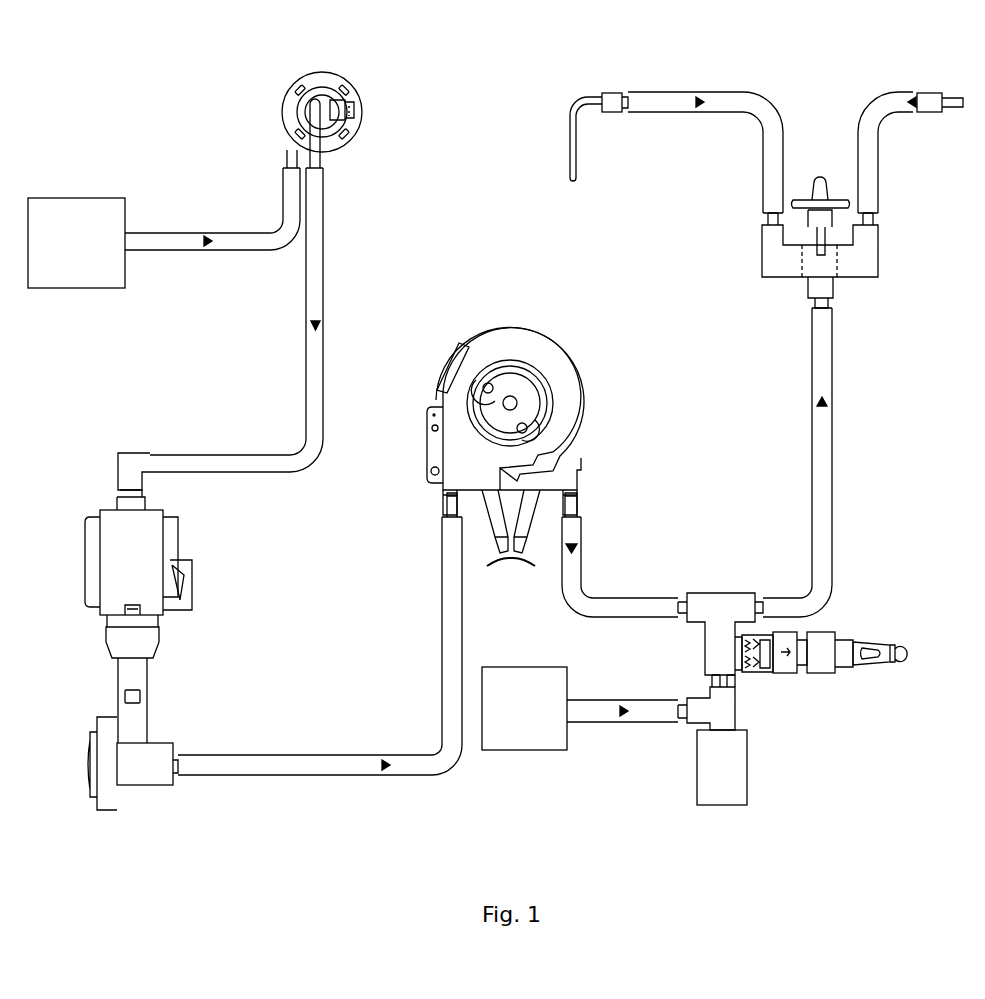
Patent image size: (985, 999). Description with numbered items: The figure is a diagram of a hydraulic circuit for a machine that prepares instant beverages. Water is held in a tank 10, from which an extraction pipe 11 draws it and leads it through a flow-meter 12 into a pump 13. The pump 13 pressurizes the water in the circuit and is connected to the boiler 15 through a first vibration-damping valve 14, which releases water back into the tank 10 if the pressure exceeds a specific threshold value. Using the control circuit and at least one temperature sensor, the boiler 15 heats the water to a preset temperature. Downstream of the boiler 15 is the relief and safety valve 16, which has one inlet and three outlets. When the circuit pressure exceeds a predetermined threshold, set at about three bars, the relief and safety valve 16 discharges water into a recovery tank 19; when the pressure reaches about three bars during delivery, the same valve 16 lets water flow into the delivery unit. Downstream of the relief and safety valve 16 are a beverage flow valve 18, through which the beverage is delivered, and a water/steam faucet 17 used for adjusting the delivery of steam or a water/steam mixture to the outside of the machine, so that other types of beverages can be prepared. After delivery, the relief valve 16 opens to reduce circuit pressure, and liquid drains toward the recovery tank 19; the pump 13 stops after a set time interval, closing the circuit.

The tank 10 is at (80, 227).
The extraction pipe 11 is at (263, 242).
The flow-meter 12 is at (330, 77).
The pump 13 is at (145, 528).
The first vibration-damping valve 14 is at (143, 760).
The boiler 15 is at (573, 390).
The relief and safety valve 16 is at (742, 607).
The water/steam faucet 17 is at (863, 265).
The beverage flow valve 18 is at (873, 650).
The recovery tank 19 is at (537, 687).